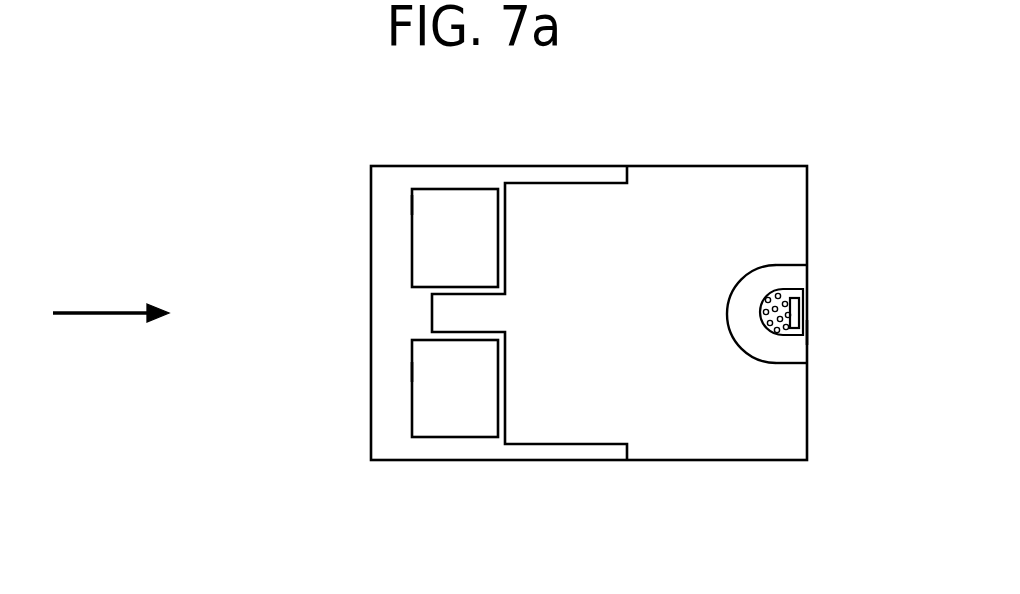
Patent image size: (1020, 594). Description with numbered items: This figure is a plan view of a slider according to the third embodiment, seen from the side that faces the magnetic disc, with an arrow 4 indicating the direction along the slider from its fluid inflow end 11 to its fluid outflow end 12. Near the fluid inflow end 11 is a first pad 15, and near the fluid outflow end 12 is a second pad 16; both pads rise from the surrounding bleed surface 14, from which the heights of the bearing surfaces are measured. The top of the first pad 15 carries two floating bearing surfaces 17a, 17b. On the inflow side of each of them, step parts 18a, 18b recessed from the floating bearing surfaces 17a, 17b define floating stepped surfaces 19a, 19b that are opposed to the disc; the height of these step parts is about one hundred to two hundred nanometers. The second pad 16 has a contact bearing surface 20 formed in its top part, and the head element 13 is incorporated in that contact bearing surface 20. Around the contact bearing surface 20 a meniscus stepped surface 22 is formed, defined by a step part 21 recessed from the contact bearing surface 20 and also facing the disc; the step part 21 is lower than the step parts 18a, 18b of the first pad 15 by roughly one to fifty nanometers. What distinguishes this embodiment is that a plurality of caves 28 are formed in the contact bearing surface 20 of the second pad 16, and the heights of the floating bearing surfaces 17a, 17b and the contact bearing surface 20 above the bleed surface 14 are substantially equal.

The viewing direction arrow 4 is at (107, 312).
The fluid inflow end 11 is at (371, 432).
The fluid outflow end 12 is at (808, 330).
The head element 13 is at (800, 310).
The bleed surface 14 is at (583, 278).
The first pad 15 is at (500, 166).
The second pad 16 is at (766, 265).
The floating bearing surface 17a is at (446, 218).
The floating bearing surface 17b is at (446, 408).
The step part 18a is at (411, 205).
The step part 18b is at (411, 373).
The floating stepped surface 19a is at (391, 247).
The floating stepped surface 19b is at (391, 410).
The contact bearing surface 20 is at (782, 292).
The step part 21 is at (783, 338).
The meniscus stepped surface 22 is at (745, 320).
The caves 28 is at (788, 291).